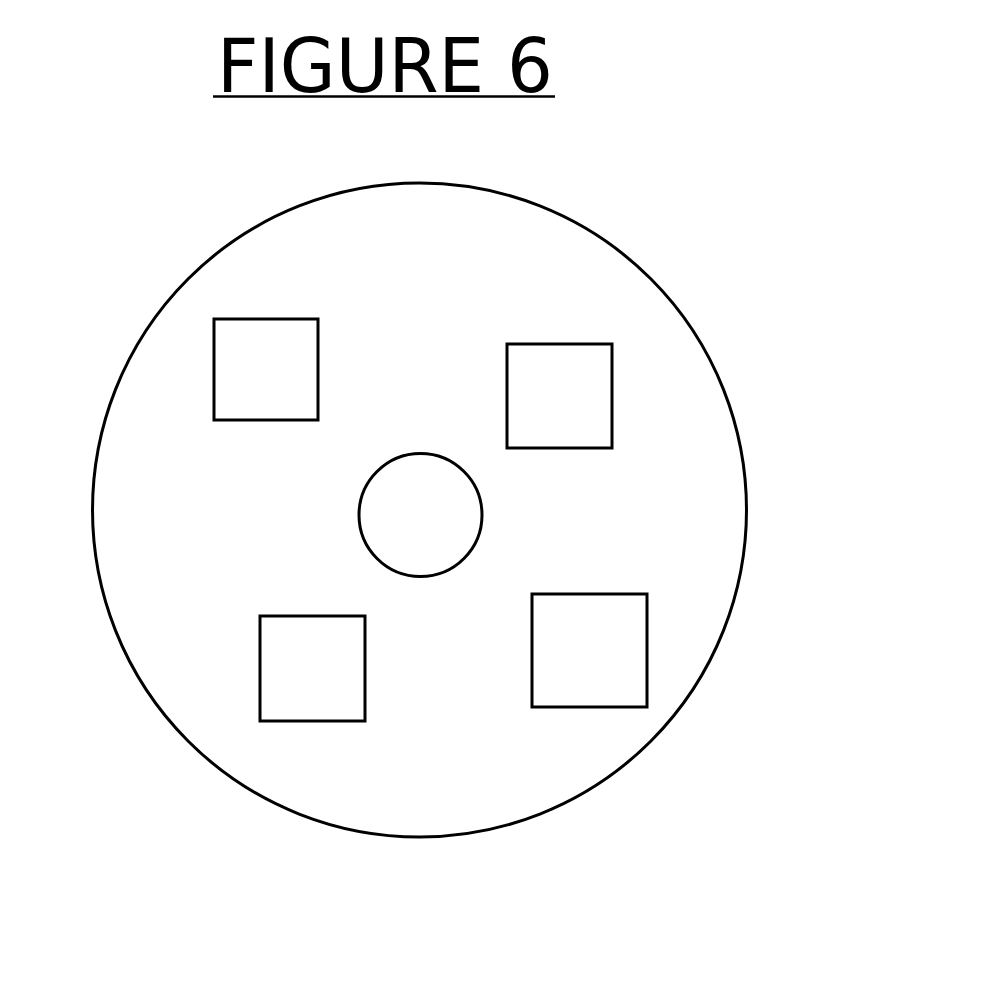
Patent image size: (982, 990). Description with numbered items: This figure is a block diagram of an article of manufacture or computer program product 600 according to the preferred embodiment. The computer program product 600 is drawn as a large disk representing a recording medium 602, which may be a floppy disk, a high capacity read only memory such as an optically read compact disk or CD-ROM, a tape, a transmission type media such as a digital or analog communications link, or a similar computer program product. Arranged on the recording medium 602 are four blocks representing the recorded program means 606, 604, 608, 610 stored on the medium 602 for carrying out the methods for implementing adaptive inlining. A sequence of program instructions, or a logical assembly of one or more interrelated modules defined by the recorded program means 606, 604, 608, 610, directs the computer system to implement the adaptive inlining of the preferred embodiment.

The computer program product 600 is at (700, 297).
The recording medium 602 is at (152, 322).
The program means 604 is at (312, 668).
The program means 606 is at (589, 650).
The program means 608 is at (559, 396).
The program means 610 is at (266, 369).